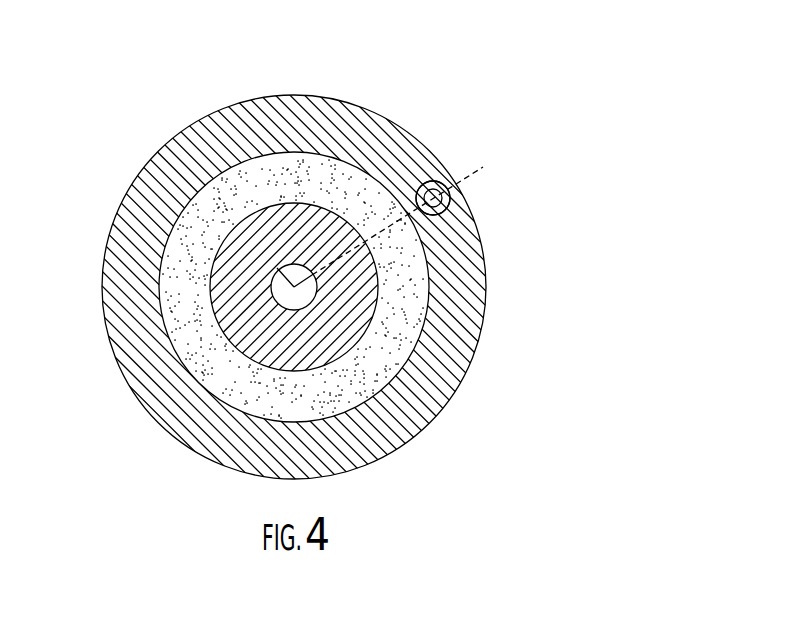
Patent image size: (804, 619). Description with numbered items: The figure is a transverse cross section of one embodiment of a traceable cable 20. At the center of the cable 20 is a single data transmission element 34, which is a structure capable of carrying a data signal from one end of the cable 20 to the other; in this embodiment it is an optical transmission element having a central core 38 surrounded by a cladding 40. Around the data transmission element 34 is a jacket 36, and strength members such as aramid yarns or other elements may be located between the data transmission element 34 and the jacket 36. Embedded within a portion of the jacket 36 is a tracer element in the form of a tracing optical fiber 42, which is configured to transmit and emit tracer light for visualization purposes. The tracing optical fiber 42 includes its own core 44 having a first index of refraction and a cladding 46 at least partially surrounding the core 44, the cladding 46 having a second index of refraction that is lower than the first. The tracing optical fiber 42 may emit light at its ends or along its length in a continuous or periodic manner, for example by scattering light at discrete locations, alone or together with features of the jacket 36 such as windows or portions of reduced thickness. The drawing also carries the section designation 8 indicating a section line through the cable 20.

The cable 20 is at (297, 309).
The section line 8- 8 is at (482, 168).
The data transmission element 34 is at (360, 350).
The jacket 36 is at (455, 327).
The core 38 is at (293, 310).
The cladding 40 is at (227, 265).
The tracing optical fiber 42 is at (453, 197).
The core 44 is at (442, 203).
The cladding 46 is at (438, 214).